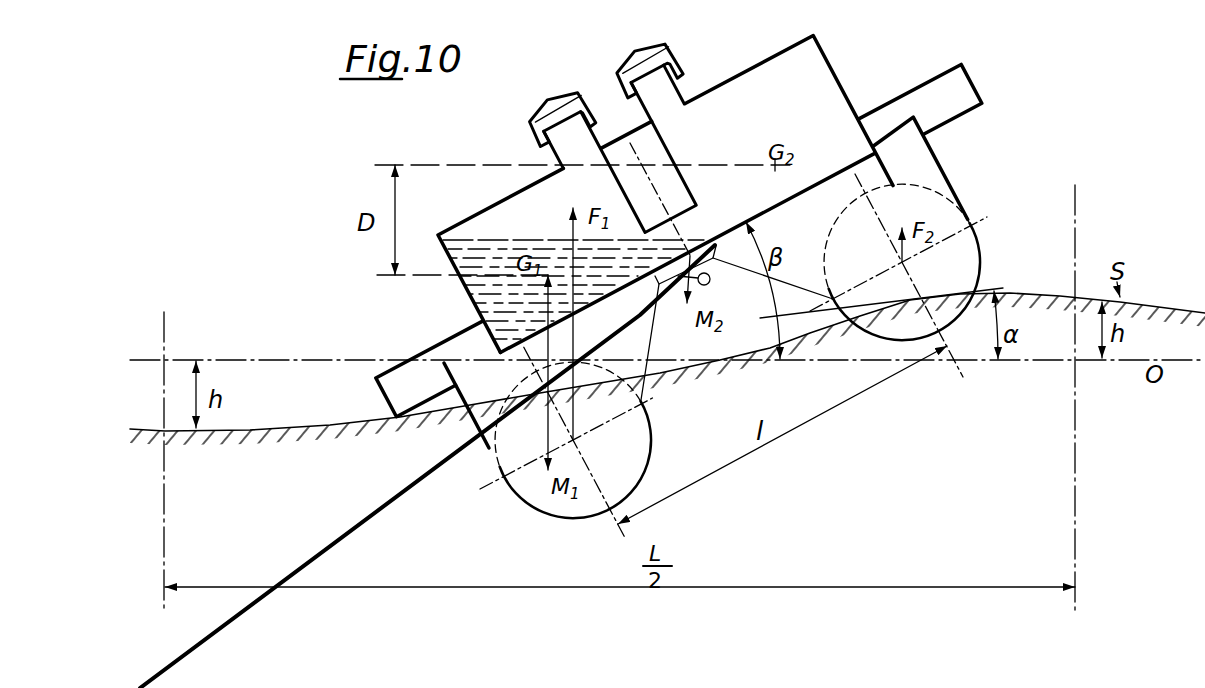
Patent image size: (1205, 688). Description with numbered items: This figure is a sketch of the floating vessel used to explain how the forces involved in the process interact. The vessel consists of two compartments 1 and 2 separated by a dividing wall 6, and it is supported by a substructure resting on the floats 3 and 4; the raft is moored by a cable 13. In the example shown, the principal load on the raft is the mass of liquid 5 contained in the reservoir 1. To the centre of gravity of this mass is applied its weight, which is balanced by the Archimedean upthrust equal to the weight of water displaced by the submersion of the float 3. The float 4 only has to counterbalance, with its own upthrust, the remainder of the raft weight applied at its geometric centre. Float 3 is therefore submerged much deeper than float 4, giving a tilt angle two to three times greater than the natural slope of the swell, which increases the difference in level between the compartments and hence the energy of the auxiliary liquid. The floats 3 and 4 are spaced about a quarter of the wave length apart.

The compartment 1 is at (478, 218).
The compartment 2 is at (810, 75).
The float 3 is at (547, 511).
The float 4 is at (970, 262).
The liquid 5 is at (484, 283).
The dividing wall 6 is at (627, 152).
The cable 13 is at (333, 547).